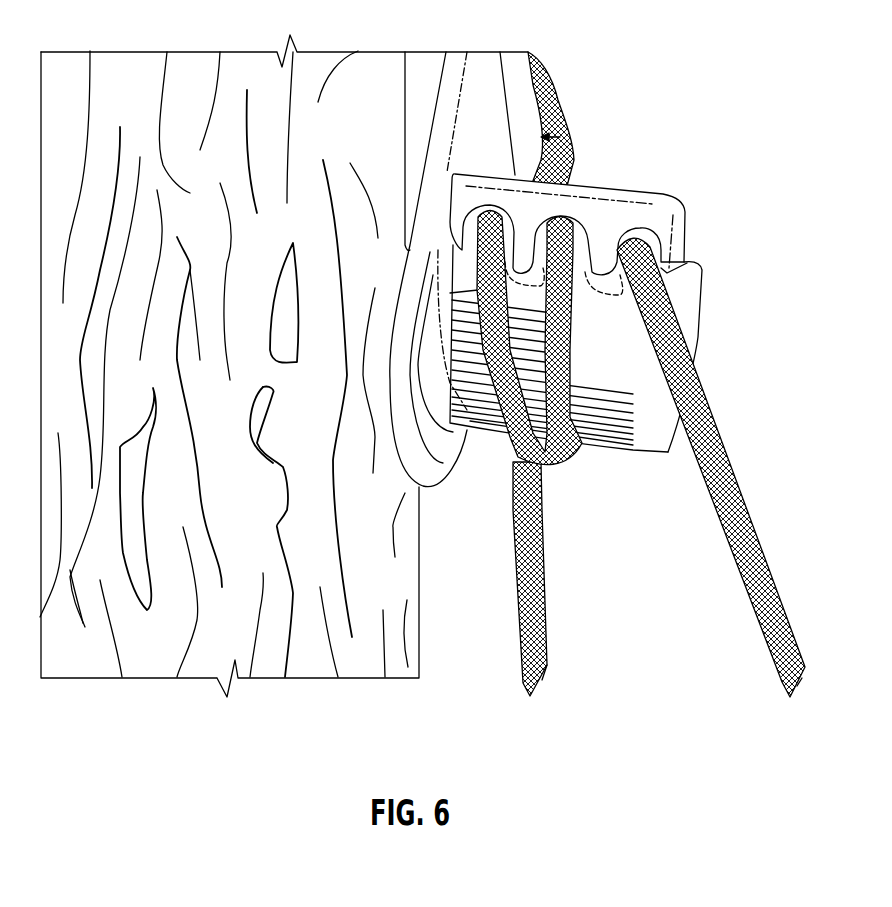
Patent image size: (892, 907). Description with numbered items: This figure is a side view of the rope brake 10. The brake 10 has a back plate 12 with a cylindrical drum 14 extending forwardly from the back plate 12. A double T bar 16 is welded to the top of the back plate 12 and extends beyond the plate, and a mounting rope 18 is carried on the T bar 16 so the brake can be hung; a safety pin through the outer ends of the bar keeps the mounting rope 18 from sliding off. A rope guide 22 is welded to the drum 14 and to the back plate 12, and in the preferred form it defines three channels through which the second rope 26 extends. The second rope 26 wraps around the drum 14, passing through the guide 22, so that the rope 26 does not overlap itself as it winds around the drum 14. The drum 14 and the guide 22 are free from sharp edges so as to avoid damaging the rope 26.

The rope brake 10 is at (605, 369).
The back plate 12 is at (443, 467).
The cylindrical drum 14 is at (645, 410).
The double T bar 16 is at (519, 88).
The mounting rope 18 is at (566, 122).
The rope guide 22 is at (632, 208).
The second rope 26 is at (746, 508).